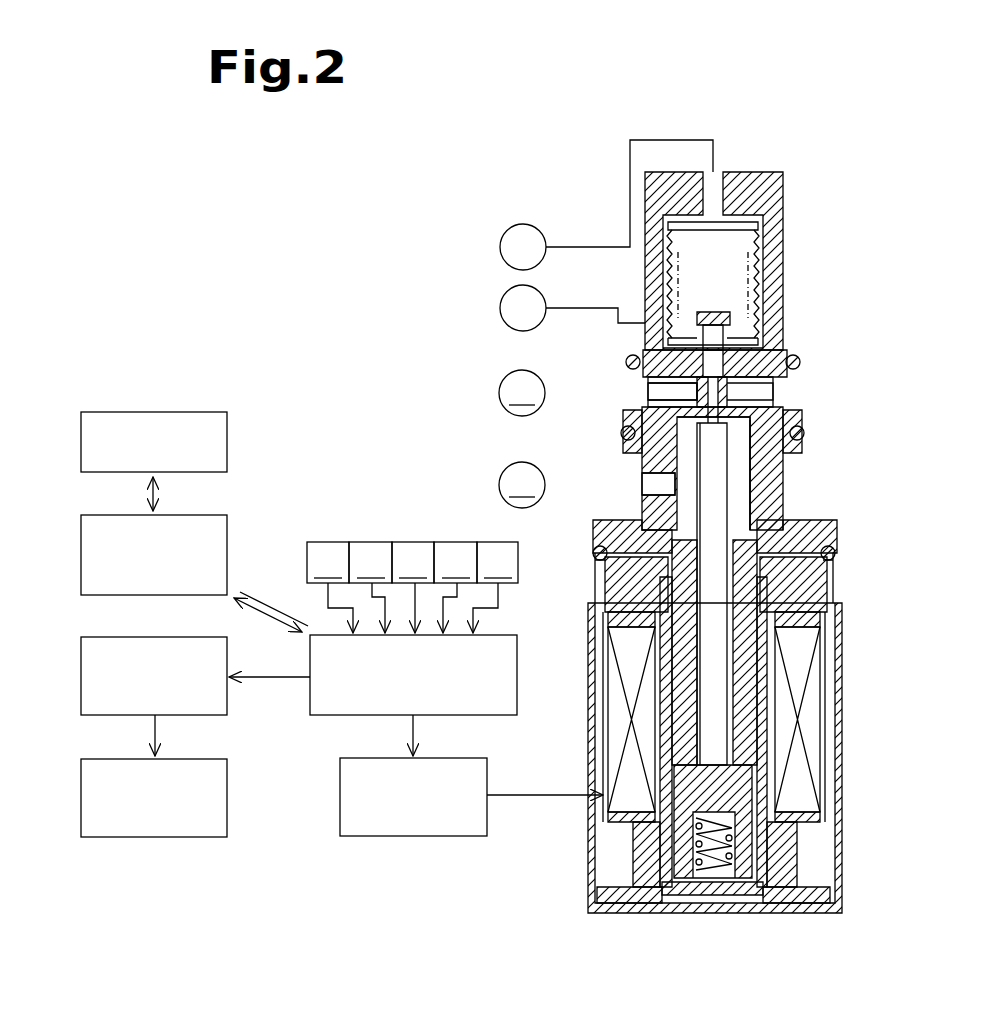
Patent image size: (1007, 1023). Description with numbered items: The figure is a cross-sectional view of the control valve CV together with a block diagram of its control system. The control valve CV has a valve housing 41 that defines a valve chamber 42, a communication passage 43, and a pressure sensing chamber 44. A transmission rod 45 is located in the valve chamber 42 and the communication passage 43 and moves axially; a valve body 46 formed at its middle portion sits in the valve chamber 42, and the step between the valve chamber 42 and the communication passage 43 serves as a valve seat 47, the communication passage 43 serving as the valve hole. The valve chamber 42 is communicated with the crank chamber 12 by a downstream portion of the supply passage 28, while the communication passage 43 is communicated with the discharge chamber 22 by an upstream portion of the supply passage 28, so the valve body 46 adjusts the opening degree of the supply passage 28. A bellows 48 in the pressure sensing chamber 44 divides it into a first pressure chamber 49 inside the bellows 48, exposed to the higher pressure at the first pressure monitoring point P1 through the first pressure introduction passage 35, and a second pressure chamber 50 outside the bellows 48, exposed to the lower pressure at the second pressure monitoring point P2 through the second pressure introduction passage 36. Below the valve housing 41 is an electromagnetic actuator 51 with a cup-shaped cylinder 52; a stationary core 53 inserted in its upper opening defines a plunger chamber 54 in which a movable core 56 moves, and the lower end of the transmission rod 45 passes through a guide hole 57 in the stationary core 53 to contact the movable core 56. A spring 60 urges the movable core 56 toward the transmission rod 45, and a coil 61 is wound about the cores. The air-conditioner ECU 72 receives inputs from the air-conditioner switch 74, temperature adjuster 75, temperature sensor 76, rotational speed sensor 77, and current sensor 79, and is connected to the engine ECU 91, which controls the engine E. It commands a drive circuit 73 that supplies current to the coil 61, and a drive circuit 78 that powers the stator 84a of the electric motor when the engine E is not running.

The engine E is at (114, 406).
The engine ECU 91 is at (115, 512).
The drive circuit 78 is at (116, 634).
The stator 84a is at (116, 755).
The air-conditioner ECU 72 is at (487, 715).
The drive circuit 73 is at (376, 754).
The air-conditioner switch 74 is at (330, 587).
The temperature adjuster 75 is at (370, 587).
The temperature sensor 76 is at (413, 587).
The rotational speed sensor 77 is at (455, 587).
The current sensor 79 is at (495, 587).
The first pressure introduction passage 35 is at (573, 247).
The second pressure introduction passage 36 is at (565, 308).
The first pressure monitoring point P1 is at (534, 200).
The second pressure monitoring point P2 is at (498, 308).
The control valve CV is at (754, 170).
The bellows 48 is at (833, 317).
The first pressure chamber 49 is at (728, 259).
The pressure sensing chamber 44 is at (759, 253).
The second pressure chamber 50 is at (670, 343).
The communication passage 43 is at (727, 401).
The valve housing 41 is at (802, 415).
The valve body 46 is at (750, 427).
The valve chamber 42 is at (743, 468).
The transmission rod 45 is at (720, 510).
The discharge chamber 22 is at (547, 393).
The crank chamber 12 is at (640, 485).
The valve seat 47 is at (645, 412).
The supply passage 28 is at (570, 396).
The stationary core 53 is at (765, 538).
The cylinder 52 is at (767, 598).
The electromagnetic actuator 51 is at (845, 630).
The coil 61 is at (818, 676).
The guide hole 57 is at (622, 640).
The plunger chamber 54 is at (745, 754).
The movable core 56 is at (750, 778).
The spring 60 is at (710, 878).